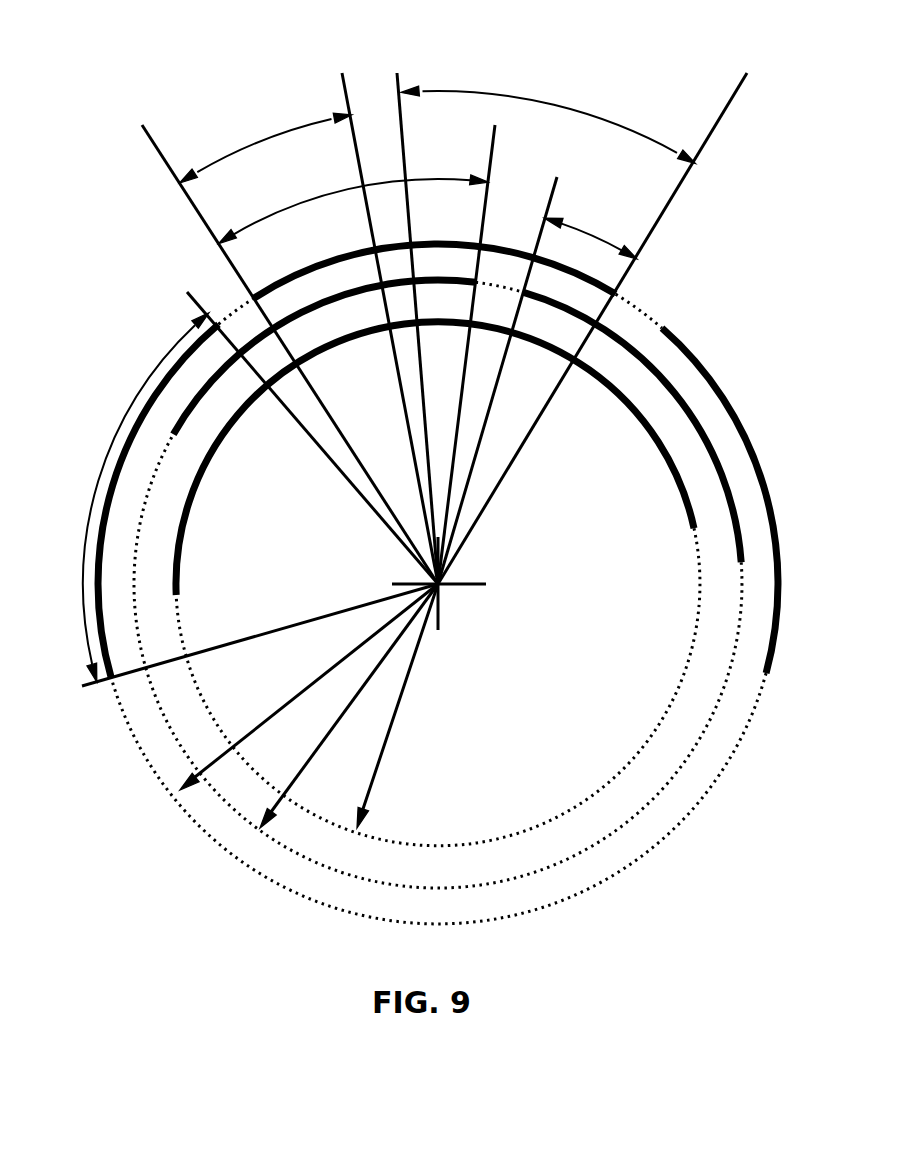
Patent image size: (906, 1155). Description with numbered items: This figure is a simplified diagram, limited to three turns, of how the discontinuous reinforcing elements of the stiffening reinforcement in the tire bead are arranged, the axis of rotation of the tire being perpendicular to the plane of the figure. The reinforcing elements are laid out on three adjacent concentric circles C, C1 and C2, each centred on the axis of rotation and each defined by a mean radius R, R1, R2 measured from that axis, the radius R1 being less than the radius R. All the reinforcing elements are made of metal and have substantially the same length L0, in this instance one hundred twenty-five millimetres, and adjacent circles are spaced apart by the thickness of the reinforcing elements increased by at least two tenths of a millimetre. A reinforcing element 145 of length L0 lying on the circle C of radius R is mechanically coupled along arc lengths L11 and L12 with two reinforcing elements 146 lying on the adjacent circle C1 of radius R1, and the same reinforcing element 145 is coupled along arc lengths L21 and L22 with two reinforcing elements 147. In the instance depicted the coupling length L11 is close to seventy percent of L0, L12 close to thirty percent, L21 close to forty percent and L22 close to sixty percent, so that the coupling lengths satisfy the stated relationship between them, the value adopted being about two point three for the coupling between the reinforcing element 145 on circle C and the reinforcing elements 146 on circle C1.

The reinforcing element 145 is at (303, 270).
The reinforcing elements 146 is at (192, 412).
The reinforcing elements 147 is at (245, 410).
The circle C is at (150, 753).
The circle C1 is at (233, 807).
The circle C2 is at (318, 815).
The mean radius R is at (309, 687).
The mean radius R1 is at (349, 706).
The mean radius R2 is at (394, 706).
The length L0 is at (133, 497).
The arc length L11 is at (354, 202).
The arc length L12 is at (590, 230).
The arc length L21 is at (266, 142).
The arc length L22 is at (548, 122).